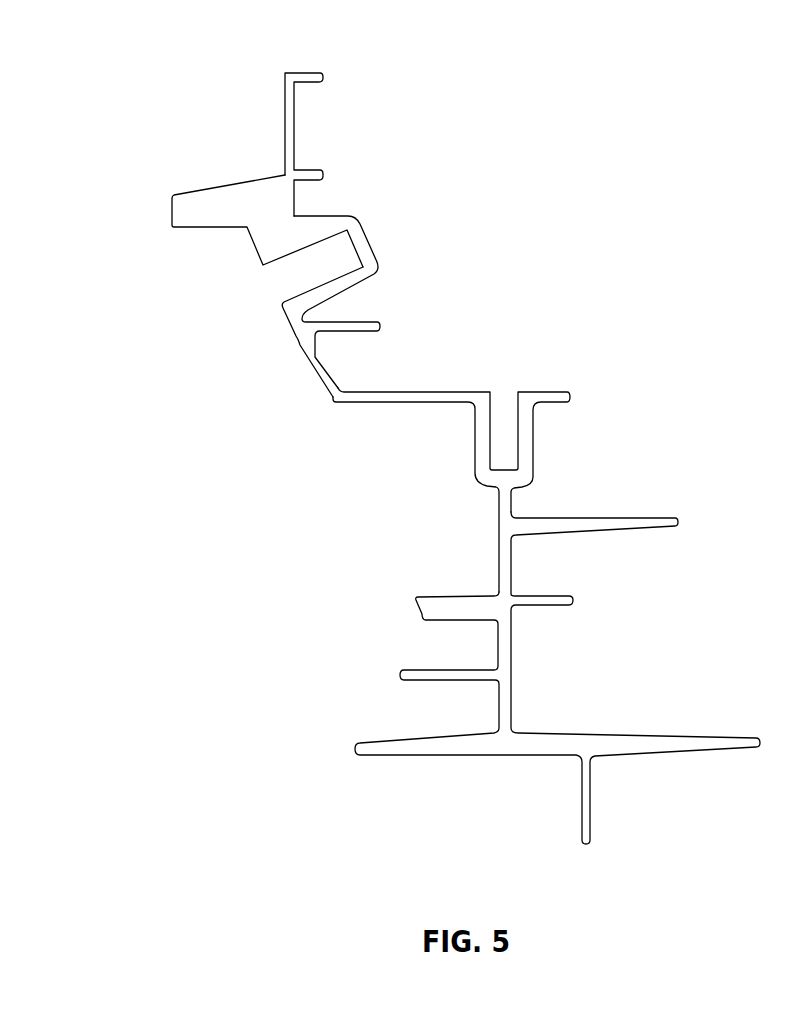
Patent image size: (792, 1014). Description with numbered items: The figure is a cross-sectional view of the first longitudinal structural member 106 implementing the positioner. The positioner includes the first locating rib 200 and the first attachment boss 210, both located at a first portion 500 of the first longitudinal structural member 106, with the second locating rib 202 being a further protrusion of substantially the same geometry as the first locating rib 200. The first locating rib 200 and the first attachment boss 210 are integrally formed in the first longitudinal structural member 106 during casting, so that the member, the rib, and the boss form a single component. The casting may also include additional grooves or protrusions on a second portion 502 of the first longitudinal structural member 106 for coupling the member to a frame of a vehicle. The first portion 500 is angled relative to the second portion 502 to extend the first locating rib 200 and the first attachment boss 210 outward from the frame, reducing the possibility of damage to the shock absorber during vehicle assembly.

The first longitudinal structural member 106 is at (313, 64).
The first locating rib 200 is at (170, 215).
The second locating rib 202 is at (130, 268).
The first attachment boss 210 is at (252, 288).
The first portion 500 is at (468, 201).
The second portion 502 is at (692, 631).